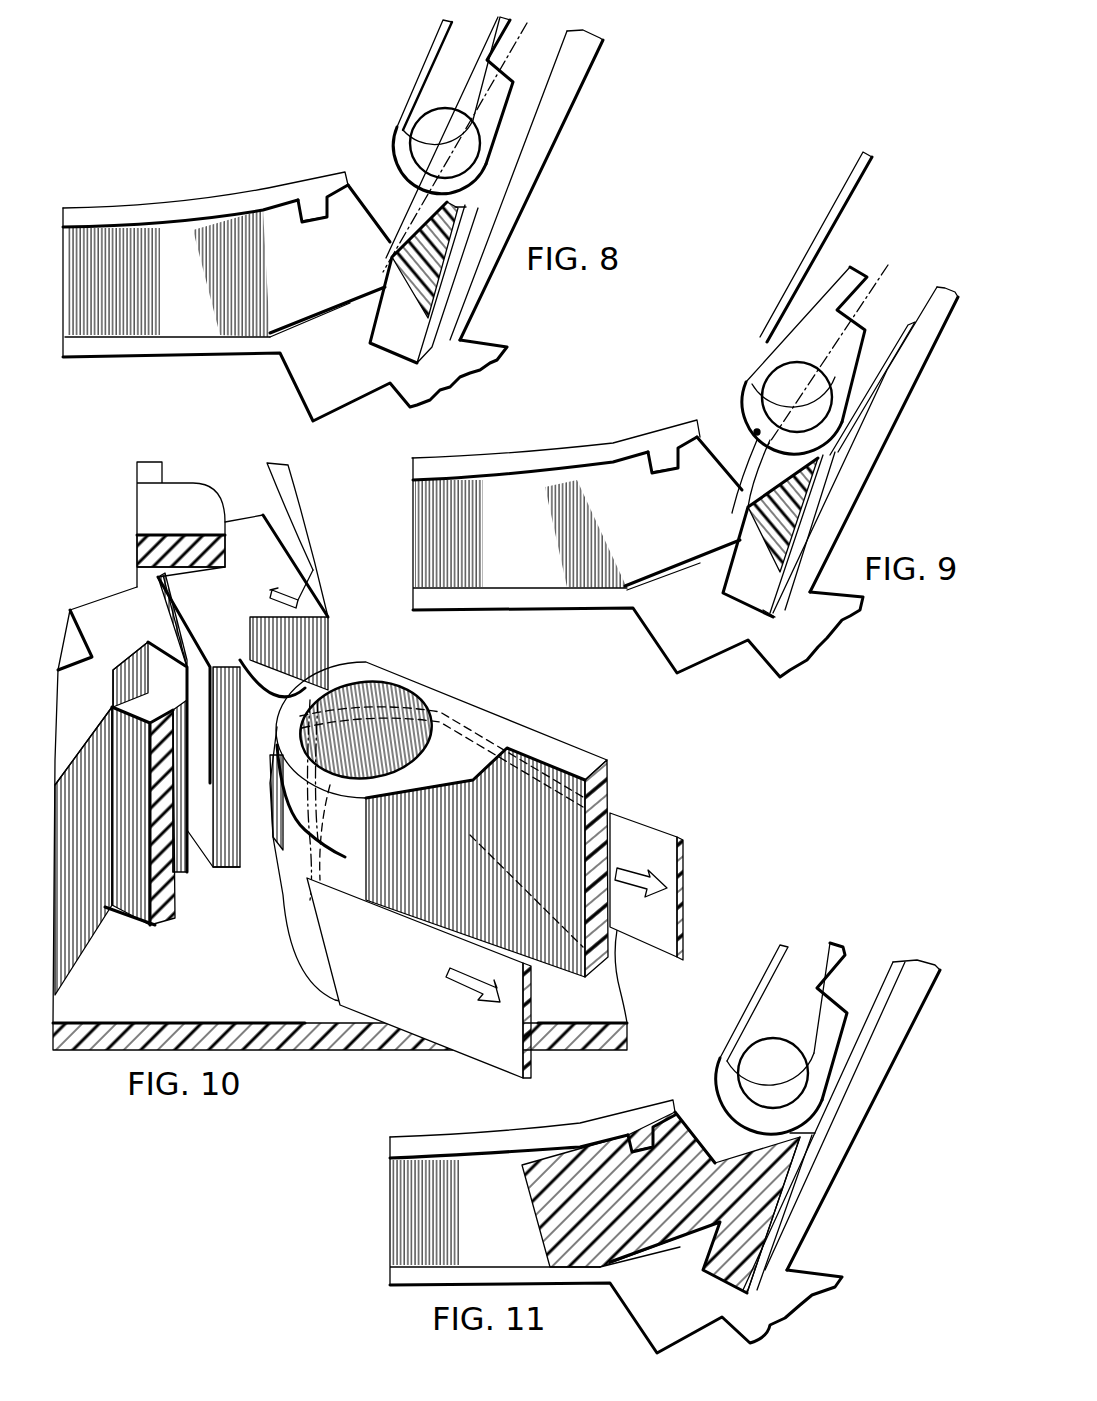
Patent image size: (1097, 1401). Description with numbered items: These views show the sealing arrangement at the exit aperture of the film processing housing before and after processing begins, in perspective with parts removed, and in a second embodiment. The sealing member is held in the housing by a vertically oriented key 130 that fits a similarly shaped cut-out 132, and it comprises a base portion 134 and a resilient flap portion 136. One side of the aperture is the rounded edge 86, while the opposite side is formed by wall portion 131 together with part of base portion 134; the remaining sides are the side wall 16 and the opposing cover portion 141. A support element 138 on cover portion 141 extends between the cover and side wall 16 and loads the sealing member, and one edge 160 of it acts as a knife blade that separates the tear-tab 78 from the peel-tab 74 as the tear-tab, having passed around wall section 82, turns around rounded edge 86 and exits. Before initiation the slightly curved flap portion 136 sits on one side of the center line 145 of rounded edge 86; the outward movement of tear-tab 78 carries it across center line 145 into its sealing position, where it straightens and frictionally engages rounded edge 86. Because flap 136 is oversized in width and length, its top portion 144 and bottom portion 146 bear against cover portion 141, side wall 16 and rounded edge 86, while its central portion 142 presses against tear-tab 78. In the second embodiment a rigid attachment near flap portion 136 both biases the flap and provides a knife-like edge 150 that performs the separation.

In FIG. 10, the side wall 16 is at (110, 1030).
In FIG. 9, the peel-tab 74 is at (850, 455).
In FIG. 8, the tear-tab 78 is at (427, 57).
In FIG. 9, the tear-tab 78 is at (830, 216).
In FIG. 10, the tear-tab 78 is at (645, 845).
In FIG. 11, the tear-tab 78 is at (782, 963).
In FIG. 8, the wall section 82 is at (572, 93).
In FIG. 9, the wall section 82 is at (920, 348).
In FIG. 11, the wall section 82 is at (875, 1075).
In FIG. 8, the rounded edge 86 is at (398, 140).
In FIG. 9, the rounded edge 86 is at (753, 370).
In FIG. 10, the rounded edge 86 is at (380, 670).
In FIG. 11, the rounded edge 86 is at (727, 1067).
In FIG. 8, the key 130 is at (316, 205).
In FIG. 9, the key 130 is at (664, 455).
In FIG. 10, the key 130 is at (298, 598).
In FIG. 11, the key 130 is at (650, 1140).
In FIG. 8, the wall portion 131 is at (345, 190).
In FIG. 9, the wall portion 131 is at (706, 438).
In FIG. 10, the wall portion 131 is at (322, 603).
In FIG. 11, the wall portion 131 is at (683, 1113).
In FIG. 8, the cut-out 132 is at (318, 216).
In FIG. 9, the cut-out 132 is at (668, 468).
In FIG. 10, the cut-out 132 is at (280, 588).
In FIG. 11, the cut-out 132 is at (690, 1130).
In FIG. 8, the base portion 134 is at (253, 222).
In FIG. 9, the base portion 134 is at (615, 480).
In FIG. 10, the base portion 134 is at (258, 530).
In FIG. 11, the base portion 134 is at (616, 1226).
In FIG. 8, the flap portion 136 is at (455, 215).
In FIG. 9, the flap portion 136 is at (760, 446).
In FIG. 10, the flap portion 136 is at (262, 818).
In FIG. 11, the flap portion 136 is at (770, 1137).
In FIG. 8, the support element 138 is at (432, 276).
In FIG. 9, the support element 138 is at (778, 512).
In FIG. 10, the cover portion 141 is at (148, 500).
In FIG. 9, the central portion 142 is at (752, 433).
In FIG. 10, the central portion 142 is at (352, 790).
In FIG. 10, the top portion 144 is at (265, 670).
In FIG. 8, the center line 145 is at (450, 160).
In FIG. 9, the center line 145 is at (795, 412).
In FIG. 10, the bottom portion 146 is at (305, 842).
In FIG. 11, the knife-like edge 150 is at (810, 1150).
In FIG. 8, the edge 160 is at (456, 204).
In FIG. 9, the edge 160 is at (838, 470).
In FIG. 11, the edge 160 is at (800, 1130).